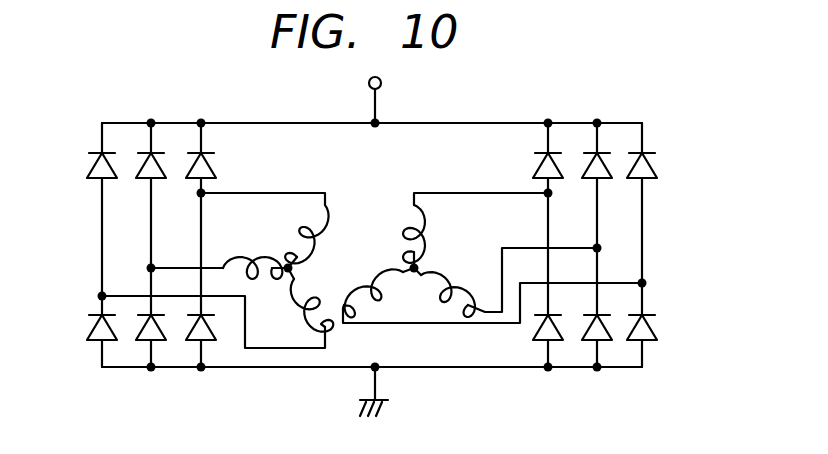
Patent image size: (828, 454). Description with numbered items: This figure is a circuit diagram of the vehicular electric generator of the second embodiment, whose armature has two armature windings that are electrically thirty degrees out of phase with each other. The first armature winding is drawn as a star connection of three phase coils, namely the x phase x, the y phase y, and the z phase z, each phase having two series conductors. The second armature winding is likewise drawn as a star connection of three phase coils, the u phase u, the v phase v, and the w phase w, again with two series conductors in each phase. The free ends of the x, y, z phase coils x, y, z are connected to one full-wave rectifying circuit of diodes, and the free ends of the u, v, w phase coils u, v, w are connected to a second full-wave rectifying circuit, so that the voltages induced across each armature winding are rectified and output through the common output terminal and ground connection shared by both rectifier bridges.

The x phase x is at (311, 234).
The y phase y is at (305, 305).
The z phase z is at (252, 255).
The u phase u is at (405, 234).
The v phase v is at (448, 289).
The w phase w is at (373, 293).